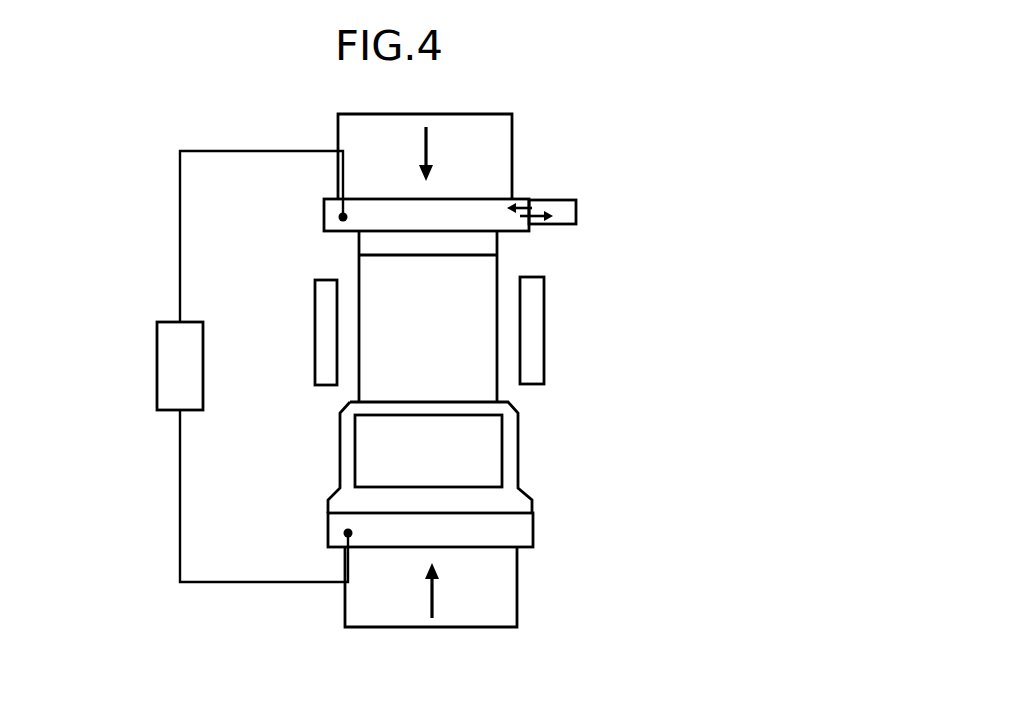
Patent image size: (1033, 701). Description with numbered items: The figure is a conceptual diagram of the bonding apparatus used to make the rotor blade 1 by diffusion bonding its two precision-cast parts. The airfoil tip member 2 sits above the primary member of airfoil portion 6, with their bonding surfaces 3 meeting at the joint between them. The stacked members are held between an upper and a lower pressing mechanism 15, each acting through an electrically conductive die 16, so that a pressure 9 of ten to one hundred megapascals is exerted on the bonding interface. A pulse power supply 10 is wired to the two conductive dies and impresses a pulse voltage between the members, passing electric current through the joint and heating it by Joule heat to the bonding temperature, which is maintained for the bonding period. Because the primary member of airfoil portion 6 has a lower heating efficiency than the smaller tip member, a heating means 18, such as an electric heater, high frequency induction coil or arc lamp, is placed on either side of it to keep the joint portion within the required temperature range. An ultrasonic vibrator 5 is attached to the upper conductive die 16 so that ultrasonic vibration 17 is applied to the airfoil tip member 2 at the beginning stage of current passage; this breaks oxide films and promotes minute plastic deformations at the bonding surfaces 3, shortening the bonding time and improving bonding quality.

The rotor blade 1 is at (327, 445).
The airfoil tip member 2 is at (372, 243).
The bonding surfaces 3 is at (482, 253).
The ultrasonic vibrator 5 is at (577, 212).
The primary member of airfoil portion 6 is at (375, 379).
The pressure 9 is at (418, 136).
The pulse power supply 10 is at (160, 368).
The pressing mechanism 15 is at (497, 142).
The electrically conductive die 16 is at (324, 216).
The ultrasonic vibration 17 is at (528, 206).
The heating means 18 is at (313, 303).